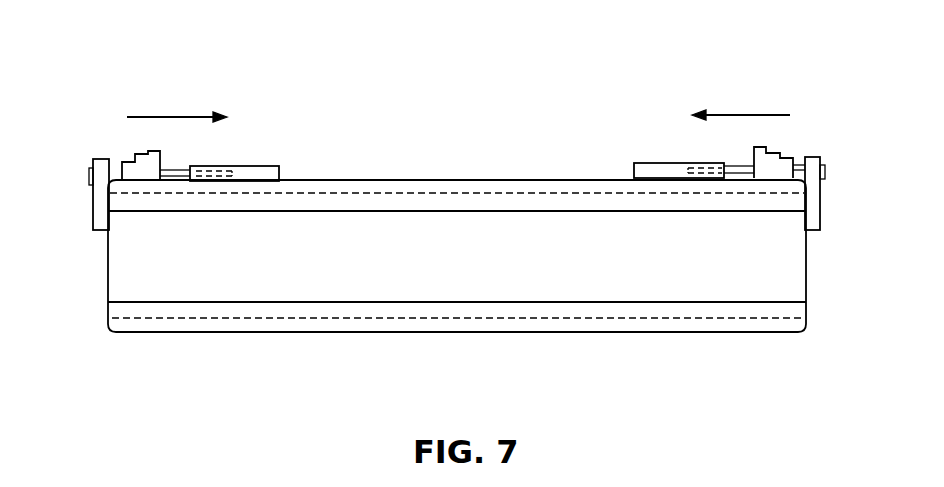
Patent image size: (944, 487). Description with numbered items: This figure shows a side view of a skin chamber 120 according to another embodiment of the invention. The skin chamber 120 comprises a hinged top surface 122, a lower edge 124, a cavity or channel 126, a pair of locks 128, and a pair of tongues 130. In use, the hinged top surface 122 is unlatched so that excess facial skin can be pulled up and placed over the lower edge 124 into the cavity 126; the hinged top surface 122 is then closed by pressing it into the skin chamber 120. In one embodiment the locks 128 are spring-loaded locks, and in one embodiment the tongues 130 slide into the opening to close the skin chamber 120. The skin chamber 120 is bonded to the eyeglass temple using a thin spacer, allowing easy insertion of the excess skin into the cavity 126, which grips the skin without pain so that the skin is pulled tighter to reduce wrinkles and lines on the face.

The skin chamber 120 is at (179, 57).
The hinged top surface 122 is at (137, 156).
The lower edge 124 is at (430, 332).
The cavity 126 is at (397, 245).
The locks 128 is at (250, 166).
The tongues 130 is at (93, 175).